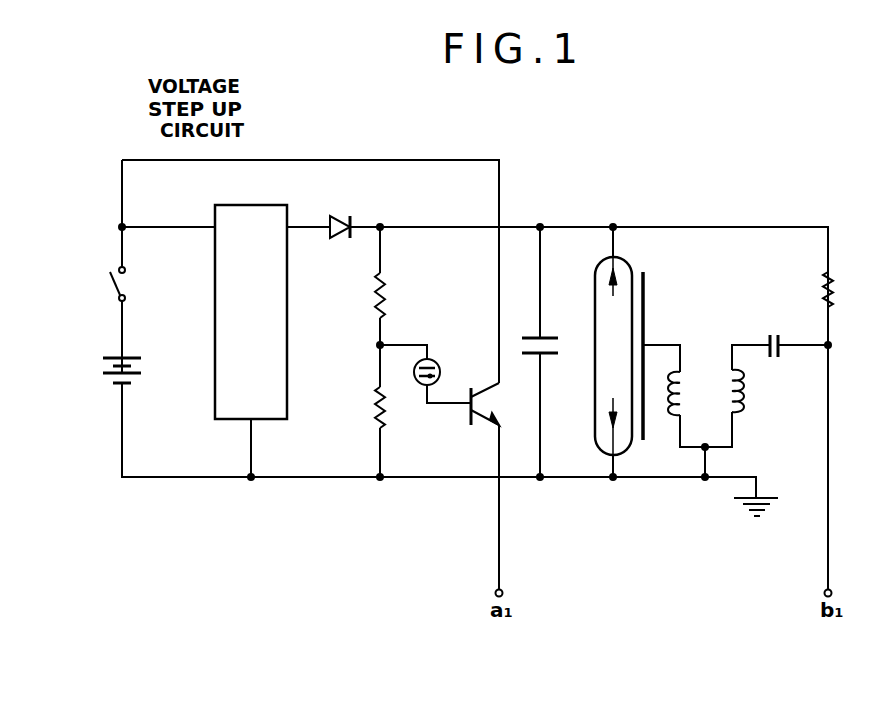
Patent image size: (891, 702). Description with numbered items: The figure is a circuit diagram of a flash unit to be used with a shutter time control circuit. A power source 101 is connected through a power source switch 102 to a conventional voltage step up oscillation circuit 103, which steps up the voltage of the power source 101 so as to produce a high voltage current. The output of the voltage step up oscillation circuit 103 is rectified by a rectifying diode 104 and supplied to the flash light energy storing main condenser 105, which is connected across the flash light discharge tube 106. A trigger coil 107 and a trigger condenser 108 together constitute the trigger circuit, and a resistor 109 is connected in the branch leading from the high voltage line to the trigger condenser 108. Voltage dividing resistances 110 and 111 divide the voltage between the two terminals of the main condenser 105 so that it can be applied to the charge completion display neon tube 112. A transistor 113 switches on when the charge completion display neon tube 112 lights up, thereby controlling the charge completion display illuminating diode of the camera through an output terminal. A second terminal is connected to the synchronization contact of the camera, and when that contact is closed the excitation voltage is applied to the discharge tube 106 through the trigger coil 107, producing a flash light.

The power source 101 is at (137, 373).
The power source switch 102 is at (134, 286).
The voltage step up oscillation circuit 103 is at (251, 312).
The rectifying diode 104 is at (340, 213).
The main condenser 105 is at (548, 331).
The flash light discharge tube 106 is at (595, 372).
The trigger coil 107 is at (687, 368).
The trigger condenser 108 is at (794, 332).
The resistor 109 is at (844, 289).
The voltage dividing resistance 110 is at (396, 295).
The voltage dividing resistance 111 is at (367, 407).
The charge completion display neon tube 112 is at (425, 374).
The transistor 113 is at (495, 404).